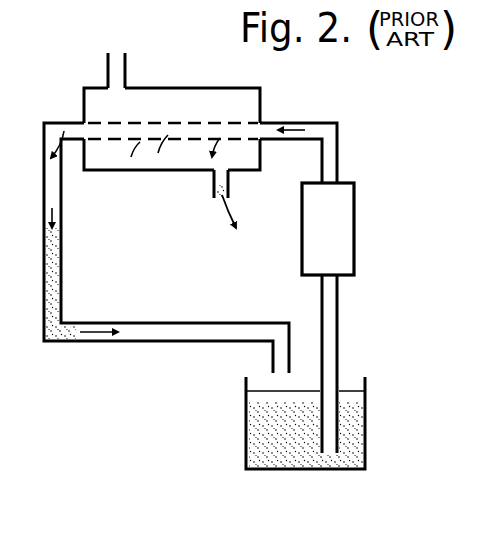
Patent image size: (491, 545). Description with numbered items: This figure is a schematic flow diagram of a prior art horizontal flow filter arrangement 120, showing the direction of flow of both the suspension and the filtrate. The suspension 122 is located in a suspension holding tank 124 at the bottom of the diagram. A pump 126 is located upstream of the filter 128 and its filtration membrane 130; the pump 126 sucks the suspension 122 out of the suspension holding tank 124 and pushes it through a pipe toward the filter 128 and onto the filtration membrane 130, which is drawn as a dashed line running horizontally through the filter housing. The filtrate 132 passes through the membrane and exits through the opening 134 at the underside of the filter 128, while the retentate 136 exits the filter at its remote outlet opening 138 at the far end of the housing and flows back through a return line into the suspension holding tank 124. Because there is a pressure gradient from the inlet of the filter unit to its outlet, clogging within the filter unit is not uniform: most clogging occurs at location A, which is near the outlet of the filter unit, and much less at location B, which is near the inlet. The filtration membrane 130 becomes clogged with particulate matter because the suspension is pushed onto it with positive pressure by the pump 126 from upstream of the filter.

The horizontal flow filter arrangement 120 is at (358, 130).
The suspension 122 is at (298, 450).
The suspension holding tank 124 is at (246, 448).
The pump 126 is at (355, 222).
The filter 128 is at (155, 86).
The filtration membrane 130 is at (178, 123).
The filtrate 132 is at (218, 208).
The opening 134 is at (212, 185).
The retentate 136 is at (88, 332).
The remote outlet opening 138 is at (86, 130).
The location A is at (97, 147).
The location B is at (240, 123).